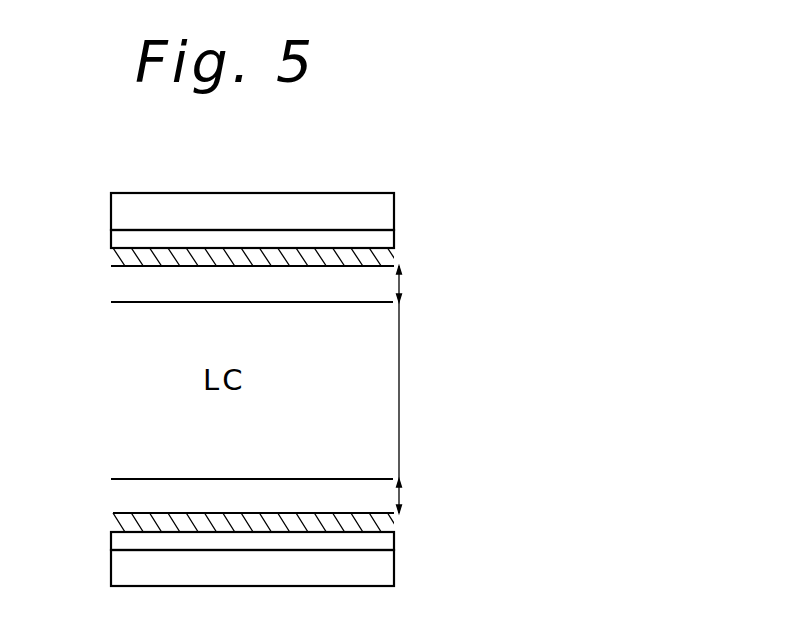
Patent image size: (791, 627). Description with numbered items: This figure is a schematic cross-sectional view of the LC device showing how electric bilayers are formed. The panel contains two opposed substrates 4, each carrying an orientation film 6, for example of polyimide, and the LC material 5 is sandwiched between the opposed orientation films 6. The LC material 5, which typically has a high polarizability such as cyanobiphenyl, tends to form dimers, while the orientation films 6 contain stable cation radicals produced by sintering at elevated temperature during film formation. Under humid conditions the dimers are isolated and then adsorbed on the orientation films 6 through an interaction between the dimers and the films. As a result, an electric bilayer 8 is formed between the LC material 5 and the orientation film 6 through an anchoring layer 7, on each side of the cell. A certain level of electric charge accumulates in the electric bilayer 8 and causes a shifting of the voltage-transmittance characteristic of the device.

The substrate 4 is at (123, 211).
The LC material 5 is at (404, 390).
The orientation film 6 is at (123, 238).
The anchoring layer 7 is at (398, 255).
The electric bilayer 8 is at (406, 285).